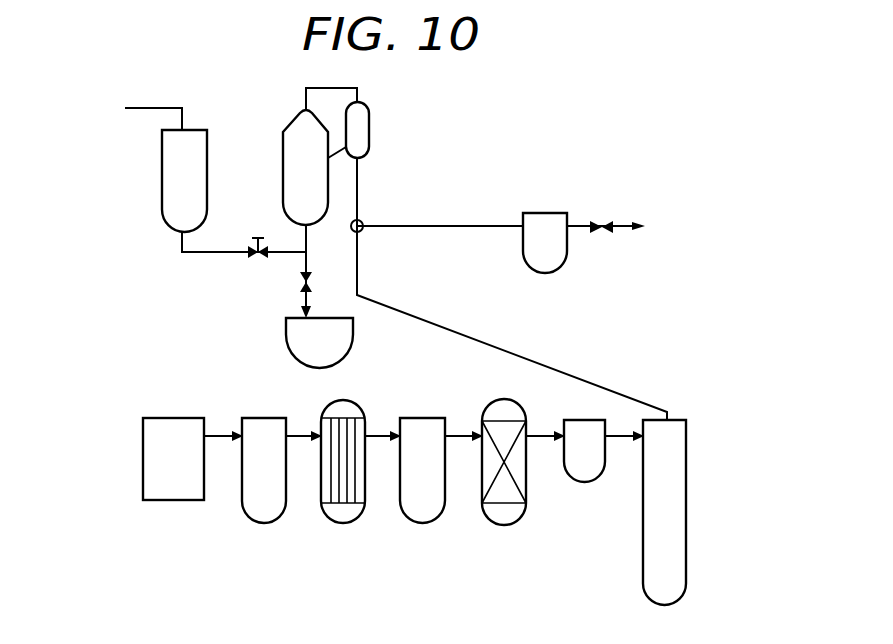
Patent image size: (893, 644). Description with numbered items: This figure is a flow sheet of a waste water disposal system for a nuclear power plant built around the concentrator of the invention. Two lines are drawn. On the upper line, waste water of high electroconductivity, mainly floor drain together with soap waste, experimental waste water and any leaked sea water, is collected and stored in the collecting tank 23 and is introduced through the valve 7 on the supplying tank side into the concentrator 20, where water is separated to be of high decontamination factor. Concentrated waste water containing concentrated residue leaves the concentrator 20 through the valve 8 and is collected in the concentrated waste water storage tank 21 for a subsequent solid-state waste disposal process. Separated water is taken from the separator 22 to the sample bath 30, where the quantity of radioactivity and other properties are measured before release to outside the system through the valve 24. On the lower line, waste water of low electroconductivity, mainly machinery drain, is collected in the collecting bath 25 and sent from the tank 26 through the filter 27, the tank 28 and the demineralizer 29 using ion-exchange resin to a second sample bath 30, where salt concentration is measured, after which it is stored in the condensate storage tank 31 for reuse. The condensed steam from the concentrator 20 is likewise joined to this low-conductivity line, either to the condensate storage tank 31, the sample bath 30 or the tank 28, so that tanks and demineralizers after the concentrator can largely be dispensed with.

The valve on the supplying tank side 7 is at (252, 258).
The valve 8 is at (298, 282).
The concentrator 20 is at (290, 137).
The concentrated waste water storage tank 21 is at (290, 340).
The separator 22 is at (362, 230).
The collecting tank 23 is at (165, 170).
The valve for releasing 24 is at (602, 220).
The collecting bath 25 is at (180, 435).
The tank 26 is at (267, 430).
The filter 27 is at (343, 427).
The tank 28 is at (425, 432).
The demineralizer 29 is at (503, 399).
The sample bath 30 is at (540, 213).
The condensate storage tank 31 is at (677, 467).